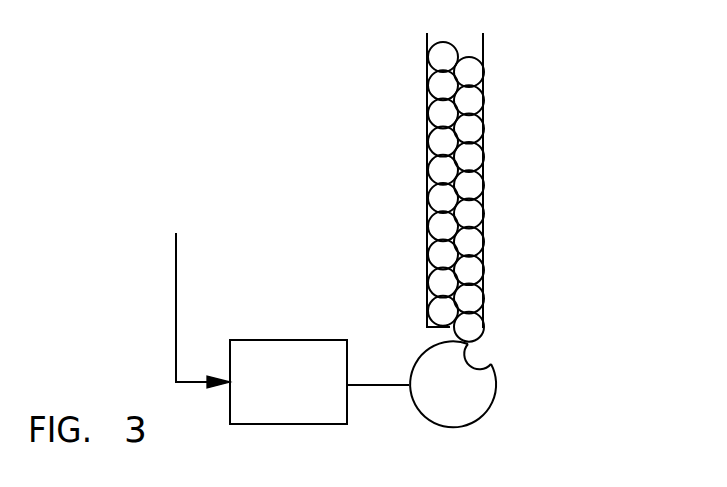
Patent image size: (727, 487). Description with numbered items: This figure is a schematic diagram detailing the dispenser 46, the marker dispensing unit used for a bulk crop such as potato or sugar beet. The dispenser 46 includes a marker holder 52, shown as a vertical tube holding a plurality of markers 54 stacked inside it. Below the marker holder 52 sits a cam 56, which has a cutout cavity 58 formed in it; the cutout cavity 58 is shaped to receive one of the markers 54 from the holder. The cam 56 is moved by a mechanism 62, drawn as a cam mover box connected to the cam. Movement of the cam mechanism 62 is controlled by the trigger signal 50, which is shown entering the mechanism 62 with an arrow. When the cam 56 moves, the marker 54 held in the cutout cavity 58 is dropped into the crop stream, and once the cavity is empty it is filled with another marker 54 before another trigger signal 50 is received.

The dispenser 46 is at (468, 176).
The trigger signal 50 is at (176, 281).
The marker holder 52 is at (484, 230).
The markers 54 is at (442, 256).
The cam 56 is at (481, 381).
The cutout cavity 58 is at (484, 371).
The mechanism 62 is at (295, 340).